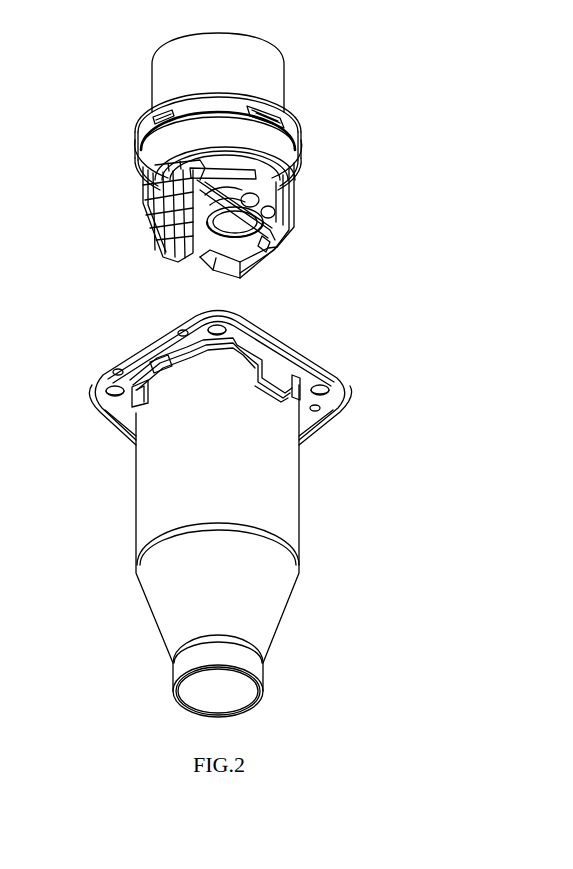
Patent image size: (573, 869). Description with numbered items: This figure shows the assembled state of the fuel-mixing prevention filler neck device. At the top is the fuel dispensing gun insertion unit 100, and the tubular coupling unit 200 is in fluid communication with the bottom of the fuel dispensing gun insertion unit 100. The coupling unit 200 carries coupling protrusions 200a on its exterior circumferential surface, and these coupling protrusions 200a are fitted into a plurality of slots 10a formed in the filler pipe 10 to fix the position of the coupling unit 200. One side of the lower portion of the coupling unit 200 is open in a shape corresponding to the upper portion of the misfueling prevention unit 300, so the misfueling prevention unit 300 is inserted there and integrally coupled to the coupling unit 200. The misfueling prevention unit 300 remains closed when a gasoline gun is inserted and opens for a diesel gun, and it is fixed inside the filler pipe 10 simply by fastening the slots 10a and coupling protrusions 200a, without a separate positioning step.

The fuel dispensing gun insertion unit 100 is at (270, 80).
The coupling unit 200 is at (285, 158).
The coupling protrusions 200a is at (152, 111).
The misfueling prevention unit 300 is at (285, 198).
The filler pipe 10 is at (288, 486).
The slots 10a is at (156, 362).